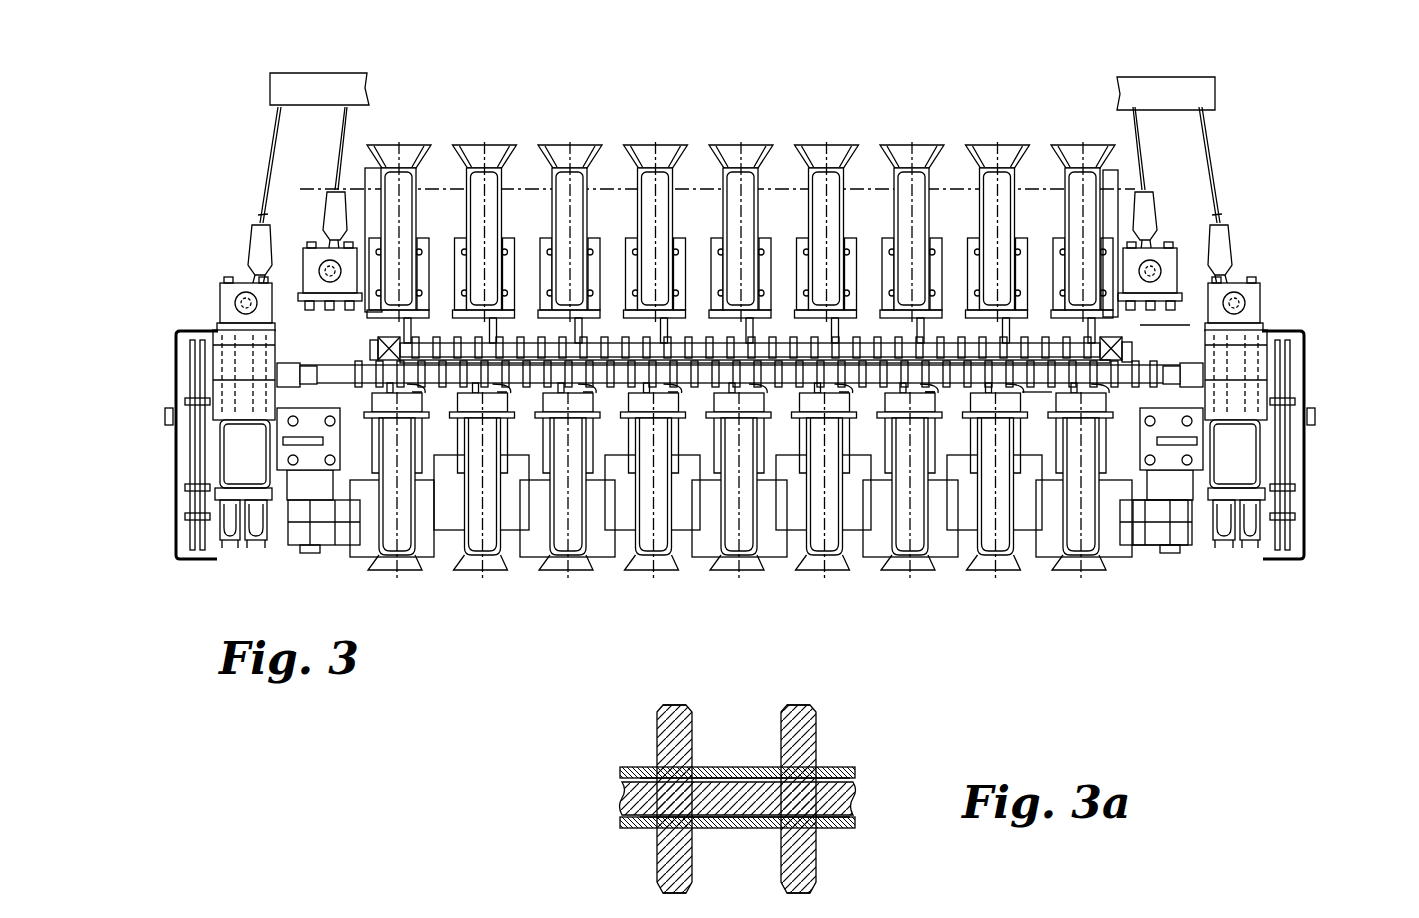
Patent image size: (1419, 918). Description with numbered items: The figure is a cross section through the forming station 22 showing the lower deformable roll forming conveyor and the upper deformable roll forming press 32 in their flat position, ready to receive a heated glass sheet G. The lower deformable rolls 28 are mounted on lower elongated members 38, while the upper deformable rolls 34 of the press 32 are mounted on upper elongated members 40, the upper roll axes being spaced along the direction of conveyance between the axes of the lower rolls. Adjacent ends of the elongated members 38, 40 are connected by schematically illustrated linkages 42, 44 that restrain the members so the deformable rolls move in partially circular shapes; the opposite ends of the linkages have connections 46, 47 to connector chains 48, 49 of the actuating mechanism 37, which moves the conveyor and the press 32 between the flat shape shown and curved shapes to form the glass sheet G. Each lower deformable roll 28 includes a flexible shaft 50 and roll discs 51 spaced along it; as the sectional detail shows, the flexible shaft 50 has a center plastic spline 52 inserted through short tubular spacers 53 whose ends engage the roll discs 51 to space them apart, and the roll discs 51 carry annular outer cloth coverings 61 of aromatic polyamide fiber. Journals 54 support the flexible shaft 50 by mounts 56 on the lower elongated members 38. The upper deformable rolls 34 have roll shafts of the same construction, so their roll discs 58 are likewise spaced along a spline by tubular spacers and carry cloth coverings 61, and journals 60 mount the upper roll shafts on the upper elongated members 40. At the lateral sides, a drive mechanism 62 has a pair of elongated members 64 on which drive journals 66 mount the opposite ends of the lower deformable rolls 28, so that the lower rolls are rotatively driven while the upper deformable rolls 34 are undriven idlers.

In FIG. 3, the forming station 22 is at (952, 112).
In FIG. 3, the actuating mechanism 37 is at (1216, 93).
In FIG. 3, the elongated members 40 is at (464, 172).
In FIG. 3, the linkage 44 is at (697, 189).
In FIG. 3, the connection 46 is at (250, 226).
In FIG. 3, the connection 47 is at (333, 192).
In FIG. 3, the connector chain 48 is at (265, 190).
In FIG. 3, the connector chain 49 is at (342, 142).
In FIG. 3, the roll discs 58 is at (543, 337).
In FIG. 3, the journals 60 is at (470, 335).
In FIG. 3, the upper deformable roll forming press 32 is at (1166, 334).
In FIG. 3, the upper deformable rolls 34 is at (1146, 353).
In FIG. 3, the drive journals 66 is at (295, 362).
In FIG. 3, the drive mechanism 62 is at (1305, 371).
In FIG. 3, the lower deformable rolls 28 is at (1182, 399).
In FIG. 3A, the lower deformable rolls 28 is at (850, 730).
In FIG. 3, the flexible shaft 50 is at (1117, 387).
In FIG. 3A, the flexible shaft 50 is at (848, 763).
In FIG. 3, the elongated members 64 is at (170, 452).
In FIG. 3, the journals 54 is at (460, 393).
In FIG. 3, the mounts 56 is at (545, 393).
In FIG. 3, the roll discs 51 is at (632, 393).
In FIG. 3A, the roll discs 51 is at (655, 848).
In FIG. 3, the glass sheet G is at (1032, 392).
In FIG. 3, the elongated members 38 is at (462, 545).
In FIG. 3, the linkage 42 is at (1143, 505).
In FIG. 3A, the center plastic spline 52 is at (752, 815).
In FIG. 3A, the short tubular spacers 53 is at (640, 767).
In FIG. 3A, the annular outer cloth coverings 61 is at (672, 705).